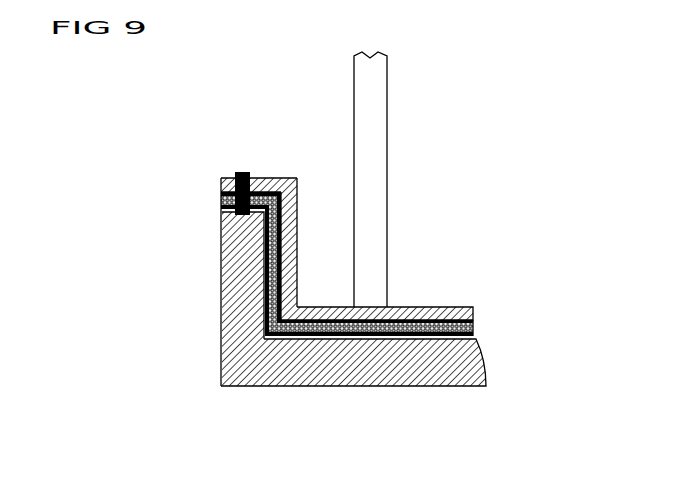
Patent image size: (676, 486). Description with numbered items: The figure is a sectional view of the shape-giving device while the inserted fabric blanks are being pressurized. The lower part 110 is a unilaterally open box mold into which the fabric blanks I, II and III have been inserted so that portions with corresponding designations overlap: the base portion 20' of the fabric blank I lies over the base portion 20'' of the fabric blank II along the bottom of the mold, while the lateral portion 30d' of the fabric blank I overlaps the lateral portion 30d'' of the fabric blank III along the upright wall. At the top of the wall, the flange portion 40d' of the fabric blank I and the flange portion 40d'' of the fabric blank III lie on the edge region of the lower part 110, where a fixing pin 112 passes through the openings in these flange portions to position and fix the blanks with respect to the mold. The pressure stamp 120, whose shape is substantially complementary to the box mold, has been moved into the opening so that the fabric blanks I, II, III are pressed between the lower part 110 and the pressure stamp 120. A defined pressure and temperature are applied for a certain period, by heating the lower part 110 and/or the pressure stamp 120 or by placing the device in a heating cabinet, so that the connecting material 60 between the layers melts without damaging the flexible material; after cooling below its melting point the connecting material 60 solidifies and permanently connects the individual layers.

The fixing pin 112 is at (243, 172).
The flange portion of fabric blank III 40d'' is at (264, 152).
The flange portion of fabric blank I 40d' is at (189, 211).
The lateral portion of fabric blank III 30d'' is at (361, 249).
The lateral portion of fabric blank I 30d' is at (208, 299).
The pressure stamp 120 is at (418, 307).
The connecting material 60 is at (476, 328).
The base portion of fabric blank I 20' is at (356, 313).
The base portion of fabric blank II 20'' is at (356, 322).
The lower part 110 is at (312, 387).
The fabric blank III is at (221, 203).
The fabric blank II is at (474, 319).
The fabric blank I is at (478, 340).